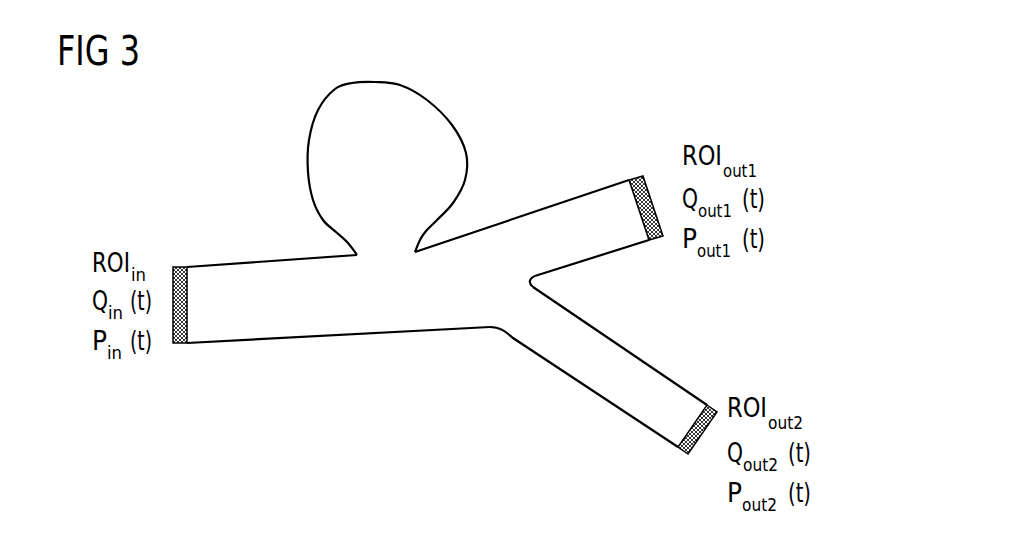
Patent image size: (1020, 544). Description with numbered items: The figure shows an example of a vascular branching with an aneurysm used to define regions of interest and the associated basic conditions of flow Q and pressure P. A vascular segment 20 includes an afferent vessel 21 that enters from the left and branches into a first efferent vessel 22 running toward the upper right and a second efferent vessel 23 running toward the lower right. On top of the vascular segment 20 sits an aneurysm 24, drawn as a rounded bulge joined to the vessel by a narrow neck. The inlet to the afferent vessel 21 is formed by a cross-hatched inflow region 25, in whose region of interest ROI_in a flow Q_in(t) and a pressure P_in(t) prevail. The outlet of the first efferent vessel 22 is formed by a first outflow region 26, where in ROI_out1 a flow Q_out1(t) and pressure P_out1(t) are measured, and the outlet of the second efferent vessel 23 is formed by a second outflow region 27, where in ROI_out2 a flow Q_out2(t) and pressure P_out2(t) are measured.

The vascular segment 20 is at (252, 261).
The afferent vessel 21 is at (353, 334).
The first efferent vessel 22 is at (559, 205).
The second efferent vessel 23 is at (632, 352).
The aneurysm 24 is at (432, 102).
The inflow region 25 is at (181, 265).
The first outflow region 26 is at (634, 177).
The second outflow region 27 is at (715, 404).